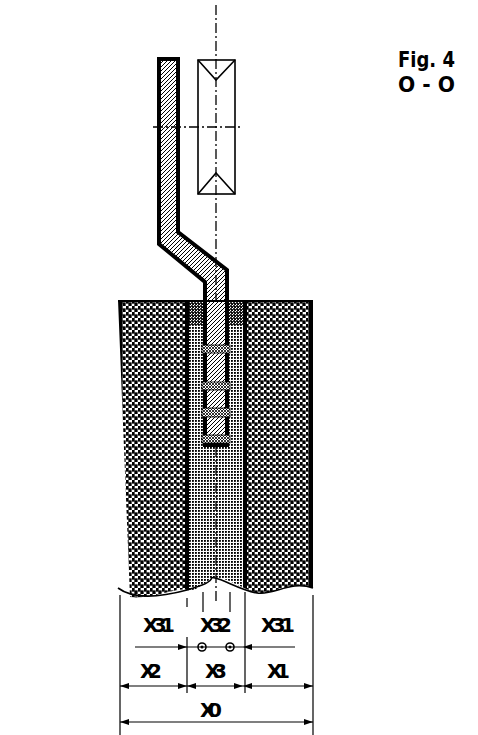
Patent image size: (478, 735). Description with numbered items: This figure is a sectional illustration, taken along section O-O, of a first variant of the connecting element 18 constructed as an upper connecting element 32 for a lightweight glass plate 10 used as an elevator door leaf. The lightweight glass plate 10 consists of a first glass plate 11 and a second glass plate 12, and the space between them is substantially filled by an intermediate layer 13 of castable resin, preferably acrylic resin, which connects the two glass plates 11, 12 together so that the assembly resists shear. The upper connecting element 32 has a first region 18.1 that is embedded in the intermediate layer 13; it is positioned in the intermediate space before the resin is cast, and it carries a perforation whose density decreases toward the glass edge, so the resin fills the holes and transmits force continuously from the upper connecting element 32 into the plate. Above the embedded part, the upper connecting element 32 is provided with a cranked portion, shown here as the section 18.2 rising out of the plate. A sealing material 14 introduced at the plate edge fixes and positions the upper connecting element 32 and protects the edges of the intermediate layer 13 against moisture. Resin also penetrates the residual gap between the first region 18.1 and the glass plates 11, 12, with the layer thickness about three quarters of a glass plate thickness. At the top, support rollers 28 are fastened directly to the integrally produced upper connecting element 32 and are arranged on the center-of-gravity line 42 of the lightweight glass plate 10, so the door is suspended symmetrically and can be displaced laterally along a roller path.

The lightweight glass plate 10 is at (96, 314).
The first glass plate 11 is at (293, 470).
The second glass plate 12 is at (150, 343).
The intermediate layer 13 is at (237, 475).
The sealing material 14 is at (243, 298).
The connecting element 18 is at (211, 241).
The upper connecting element 32 is at (157, 212).
The first region 18.1 is at (229, 352).
The upper section of guide element 18.2 is at (157, 100).
The support rollers 28 is at (223, 97).
The center-of-gravity line 42 is at (217, 32).